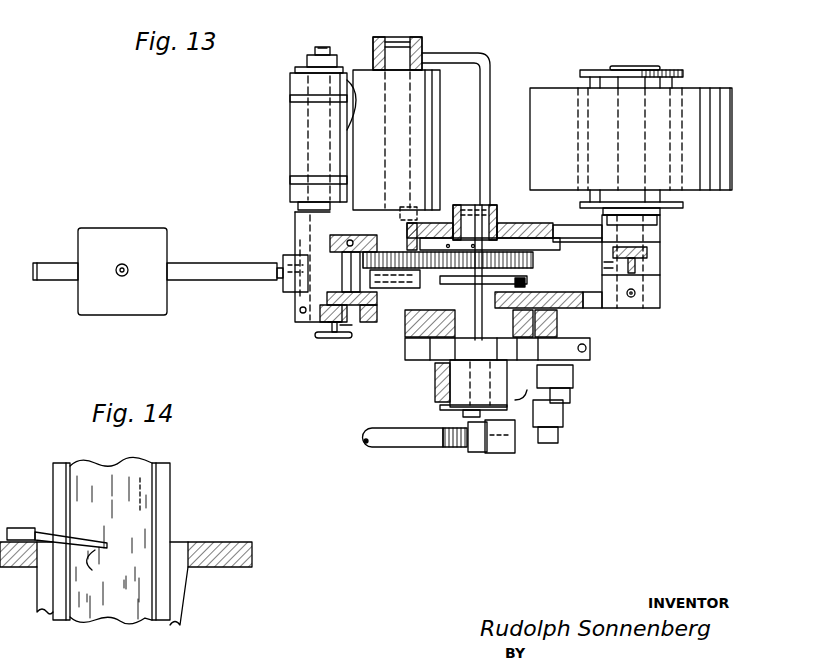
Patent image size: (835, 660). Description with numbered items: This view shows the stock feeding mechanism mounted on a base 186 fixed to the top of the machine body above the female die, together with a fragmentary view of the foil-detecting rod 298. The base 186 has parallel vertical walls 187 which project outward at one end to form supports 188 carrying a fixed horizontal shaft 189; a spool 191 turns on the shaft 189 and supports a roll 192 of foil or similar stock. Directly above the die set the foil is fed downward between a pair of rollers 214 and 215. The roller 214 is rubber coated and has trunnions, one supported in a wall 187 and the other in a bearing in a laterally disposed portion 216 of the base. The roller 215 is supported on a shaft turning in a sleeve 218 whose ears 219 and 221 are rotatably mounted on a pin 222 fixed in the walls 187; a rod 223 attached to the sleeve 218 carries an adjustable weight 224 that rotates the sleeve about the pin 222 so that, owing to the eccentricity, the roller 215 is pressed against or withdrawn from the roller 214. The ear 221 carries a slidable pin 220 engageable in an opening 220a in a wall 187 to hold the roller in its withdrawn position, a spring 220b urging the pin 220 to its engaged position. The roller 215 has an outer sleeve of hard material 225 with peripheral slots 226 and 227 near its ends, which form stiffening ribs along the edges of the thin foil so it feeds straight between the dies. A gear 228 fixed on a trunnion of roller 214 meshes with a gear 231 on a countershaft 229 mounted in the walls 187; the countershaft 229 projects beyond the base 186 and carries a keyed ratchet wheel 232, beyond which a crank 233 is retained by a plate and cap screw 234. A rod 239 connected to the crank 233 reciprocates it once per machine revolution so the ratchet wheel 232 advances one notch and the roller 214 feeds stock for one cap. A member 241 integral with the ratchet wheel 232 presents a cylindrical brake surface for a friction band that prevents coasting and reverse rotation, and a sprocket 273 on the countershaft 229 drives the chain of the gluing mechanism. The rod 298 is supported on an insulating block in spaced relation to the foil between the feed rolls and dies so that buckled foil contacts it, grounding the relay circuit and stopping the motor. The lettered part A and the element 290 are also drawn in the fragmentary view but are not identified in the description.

In FIG. 13, the roller 215 is at (300, 136).
In FIG. 13, the outer coating or sleeve of hard material 225 is at (302, 73).
In FIG. 13, the peripheral slot 226 is at (292, 98).
In FIG. 13, the peripheral slot 227 is at (292, 180).
In FIG. 13, the roller 214 is at (417, 88).
In FIG. 13, the tube A is at (366, 100).
In FIG. 14, the tube A is at (172, 467).
In FIG. 13, the laterally disposed portion of the base 216 is at (488, 70).
In FIG. 13, the countershaft 229 is at (477, 217).
In FIG. 13, the gear 231 is at (497, 247).
In FIG. 13, the sprocket 273 is at (517, 250).
In FIG. 13, the weight 224 is at (115, 238).
In FIG. 13, the rod 223 is at (198, 268).
In FIG. 13, the sleeve 218 is at (283, 300).
In FIG. 13, the ear 219 is at (320, 228).
In FIG. 13, the pin 222 is at (348, 262).
In FIG. 13, the gear 228 is at (402, 287).
In FIG. 13, the ear 221 is at (305, 313).
In FIG. 13, the slidable pin 220 is at (333, 339).
In FIG. 13, the opening 220a is at (325, 324).
In FIG. 13, the spring 220b is at (355, 327).
In FIG. 13, the vertical walls 187 is at (575, 237).
In FIG. 13, the supports 188 is at (657, 288).
In FIG. 13, the shaft 189 is at (657, 307).
In FIG. 13, the base 186 is at (608, 317).
In FIG. 14, the base 186 is at (226, 546).
In FIG. 13, the ratchet wheel 232 is at (440, 350).
In FIG. 13, the brake member 241 is at (405, 350).
In FIG. 13, the rod 239 is at (392, 441).
In FIG. 13, the plate and cap screw 234 is at (450, 410).
In FIG. 13, the crank 233 is at (527, 388).
In FIG. 13, the roll of foil 192 is at (700, 95).
In FIG. 13, the spool 191 is at (600, 83).
In FIG. 14, the rod 298 is at (65, 557).
In FIG. 14, the slot 290 is at (72, 487).